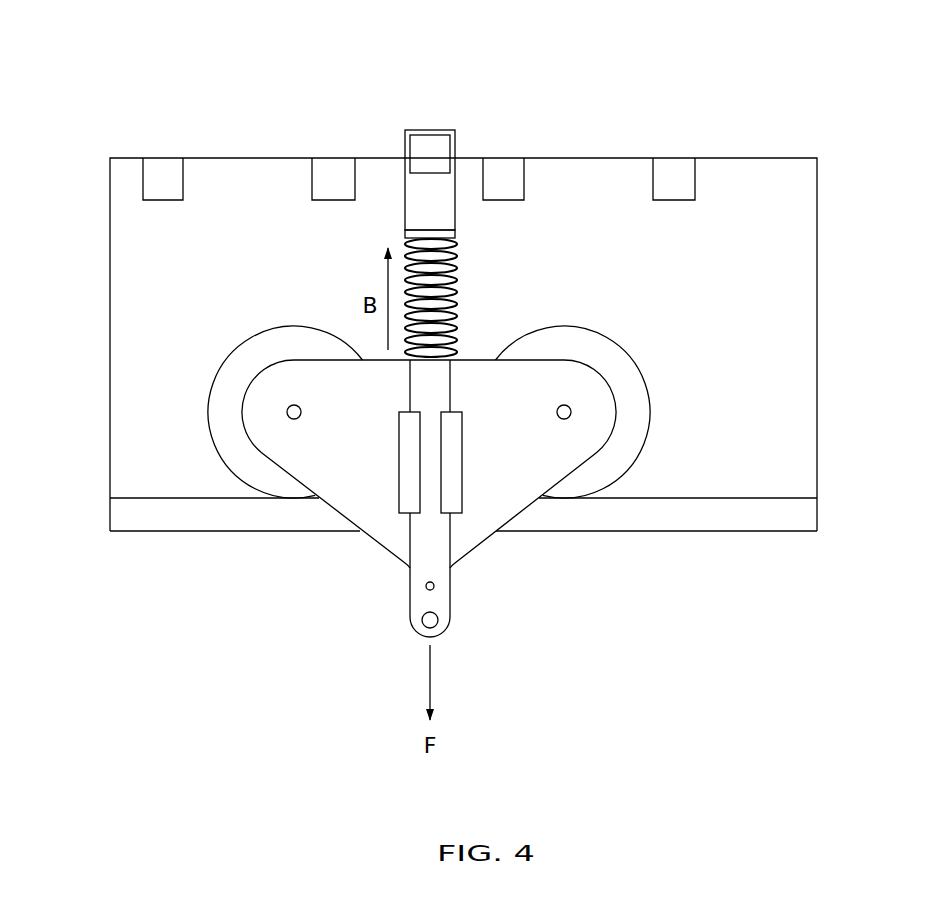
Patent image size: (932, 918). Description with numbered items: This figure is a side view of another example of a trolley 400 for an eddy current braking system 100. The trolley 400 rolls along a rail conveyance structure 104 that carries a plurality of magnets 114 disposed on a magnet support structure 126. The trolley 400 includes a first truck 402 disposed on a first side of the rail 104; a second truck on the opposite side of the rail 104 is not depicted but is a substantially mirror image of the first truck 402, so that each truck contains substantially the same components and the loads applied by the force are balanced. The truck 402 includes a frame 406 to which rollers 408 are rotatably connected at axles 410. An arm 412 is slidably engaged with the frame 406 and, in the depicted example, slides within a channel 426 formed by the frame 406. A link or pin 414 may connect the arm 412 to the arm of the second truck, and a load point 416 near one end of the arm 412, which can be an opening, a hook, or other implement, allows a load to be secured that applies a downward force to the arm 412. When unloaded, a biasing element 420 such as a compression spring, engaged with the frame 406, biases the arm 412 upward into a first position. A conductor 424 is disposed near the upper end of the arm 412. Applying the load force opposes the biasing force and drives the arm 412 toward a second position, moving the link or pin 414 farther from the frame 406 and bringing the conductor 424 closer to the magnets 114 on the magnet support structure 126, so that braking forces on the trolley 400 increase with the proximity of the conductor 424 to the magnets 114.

The eddy current braking system 100 is at (552, 105).
The rail conveyance structure 104 is at (787, 512).
The magnets 114 is at (335, 177).
The magnet support structure 126 is at (780, 237).
The trolley 400 is at (183, 628).
The first truck 402 is at (608, 628).
The frame 406 is at (363, 495).
The rollers 408 is at (240, 375).
The axles 410 is at (298, 417).
The arm 412 is at (437, 568).
The link or pin 414 is at (427, 587).
The load point 416 is at (433, 622).
The biasing element 420 is at (455, 303).
The conductor 424 is at (428, 155).
The channel 426 is at (408, 440).